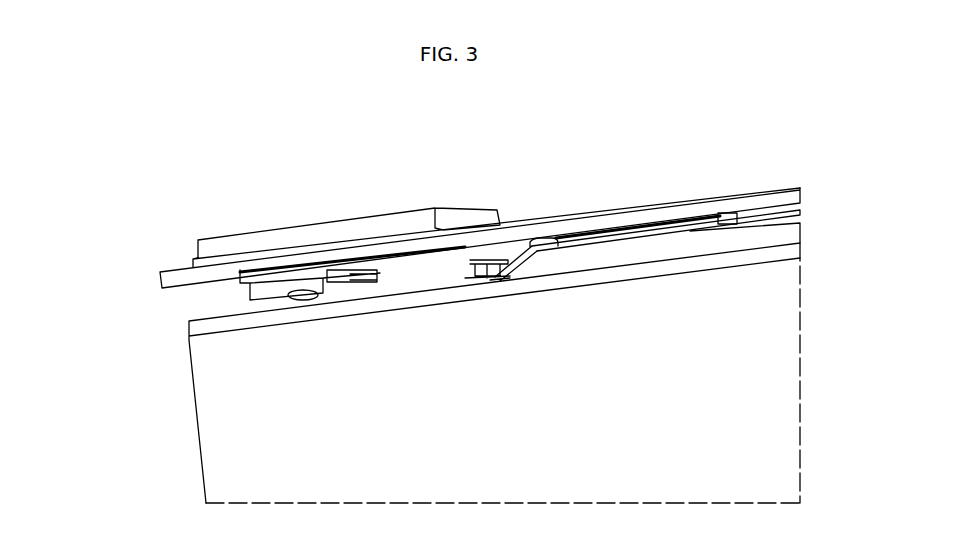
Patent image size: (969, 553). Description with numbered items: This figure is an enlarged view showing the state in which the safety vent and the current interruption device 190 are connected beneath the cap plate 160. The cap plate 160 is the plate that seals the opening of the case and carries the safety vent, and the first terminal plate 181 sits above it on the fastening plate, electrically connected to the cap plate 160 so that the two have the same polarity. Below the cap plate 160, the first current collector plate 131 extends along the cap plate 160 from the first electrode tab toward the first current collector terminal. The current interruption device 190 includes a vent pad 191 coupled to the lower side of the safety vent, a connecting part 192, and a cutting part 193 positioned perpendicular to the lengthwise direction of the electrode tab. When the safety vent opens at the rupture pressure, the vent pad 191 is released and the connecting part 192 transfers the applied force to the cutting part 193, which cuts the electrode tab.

The first current collector plate 131 is at (255, 286).
The cap plate 160 is at (677, 203).
The first terminal plate 181 is at (333, 227).
The current interruption device 190 is at (463, 142).
The vent pad 191 is at (647, 212).
The connecting part 192 is at (570, 240).
The cutting part 193 is at (465, 272).